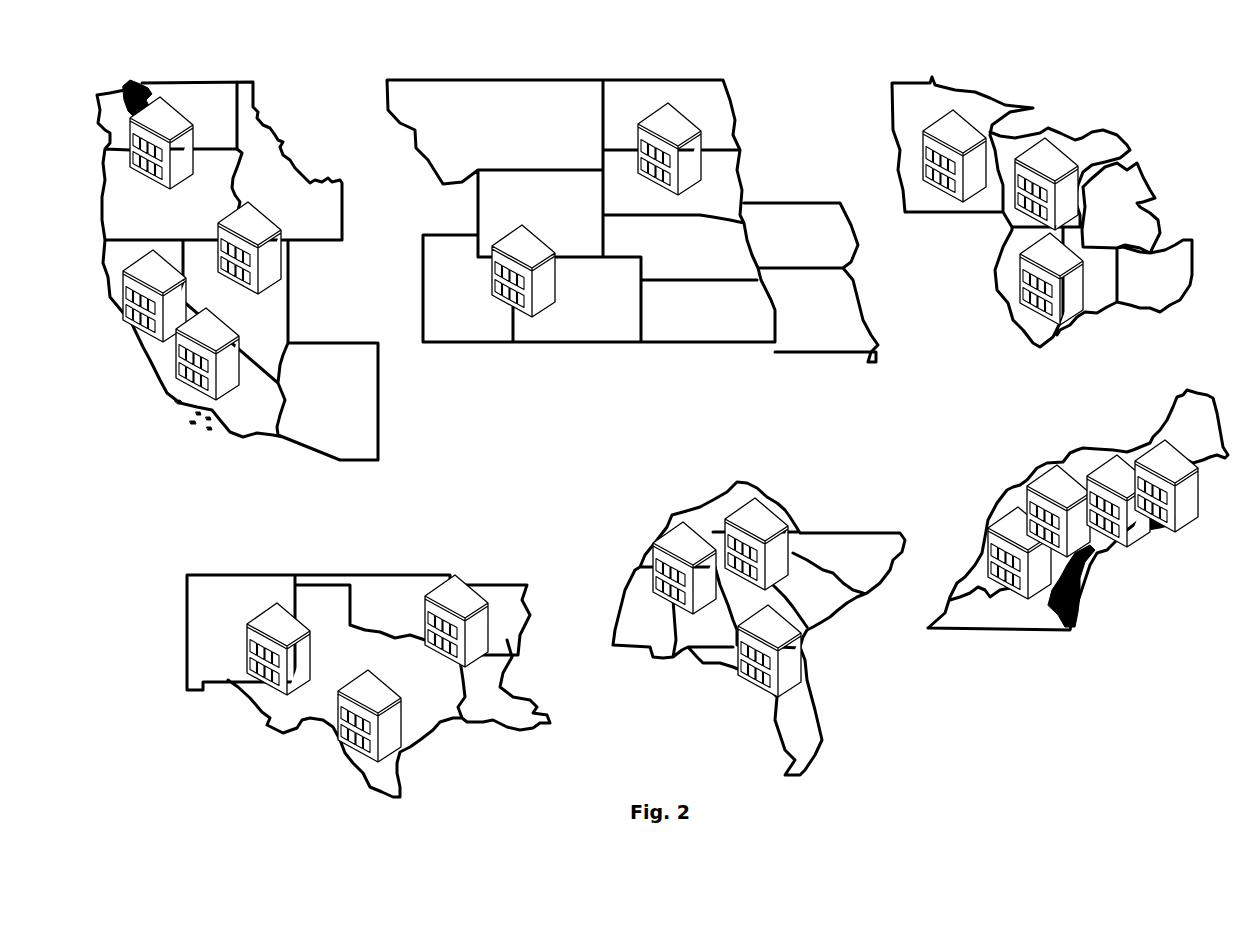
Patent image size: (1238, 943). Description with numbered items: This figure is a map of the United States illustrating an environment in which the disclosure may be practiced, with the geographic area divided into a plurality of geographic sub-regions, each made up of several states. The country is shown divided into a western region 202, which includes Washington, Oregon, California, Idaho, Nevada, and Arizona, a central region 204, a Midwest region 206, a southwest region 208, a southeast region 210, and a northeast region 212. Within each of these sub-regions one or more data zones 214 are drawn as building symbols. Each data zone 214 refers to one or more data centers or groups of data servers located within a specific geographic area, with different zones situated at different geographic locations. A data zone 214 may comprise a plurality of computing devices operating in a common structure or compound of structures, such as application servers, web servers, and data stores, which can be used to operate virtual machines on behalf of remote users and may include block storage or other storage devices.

The western region 202 is at (318, 178).
The central region 204 is at (775, 205).
The Midwest region 206 is at (1178, 237).
The southwest region 208 is at (392, 572).
The southeast region 210 is at (698, 663).
The northeast region 212 is at (1180, 393).
The data zone 214 is at (152, 117).